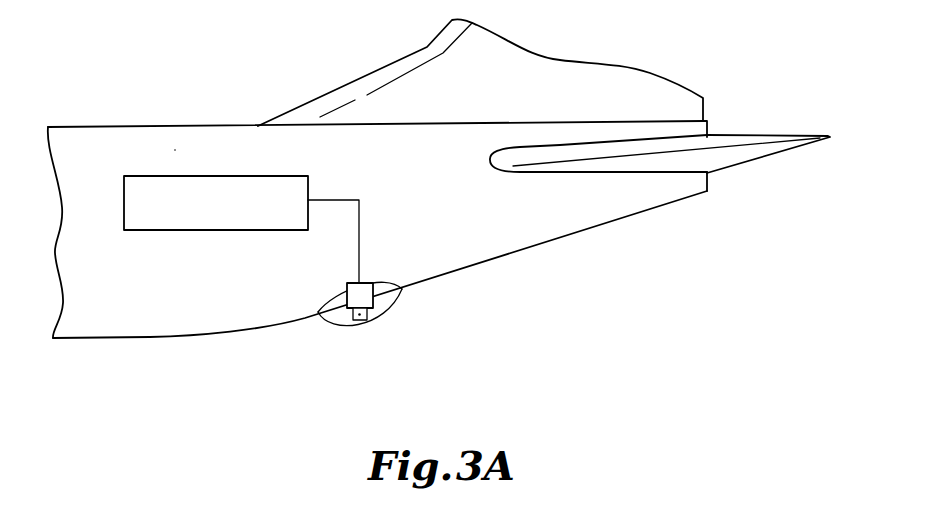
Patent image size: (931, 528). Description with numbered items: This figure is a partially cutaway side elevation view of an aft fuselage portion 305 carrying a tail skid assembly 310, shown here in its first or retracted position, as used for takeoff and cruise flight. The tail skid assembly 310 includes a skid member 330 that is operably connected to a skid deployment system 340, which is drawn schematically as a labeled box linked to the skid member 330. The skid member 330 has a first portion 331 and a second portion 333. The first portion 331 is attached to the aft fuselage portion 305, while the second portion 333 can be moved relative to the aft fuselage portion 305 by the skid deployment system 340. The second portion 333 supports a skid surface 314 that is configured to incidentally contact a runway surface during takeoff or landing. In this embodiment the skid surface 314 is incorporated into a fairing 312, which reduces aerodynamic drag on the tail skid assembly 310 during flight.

The aft fuselage portion 305 is at (148, 337).
The tail skid assembly 310 is at (430, 303).
The fairing 312 is at (321, 317).
The skid surface 314 is at (358, 324).
The skid member 330 is at (347, 291).
The first portion 331 is at (384, 286).
The second portion 333 is at (381, 318).
The skid deployment system 340 is at (143, 176).